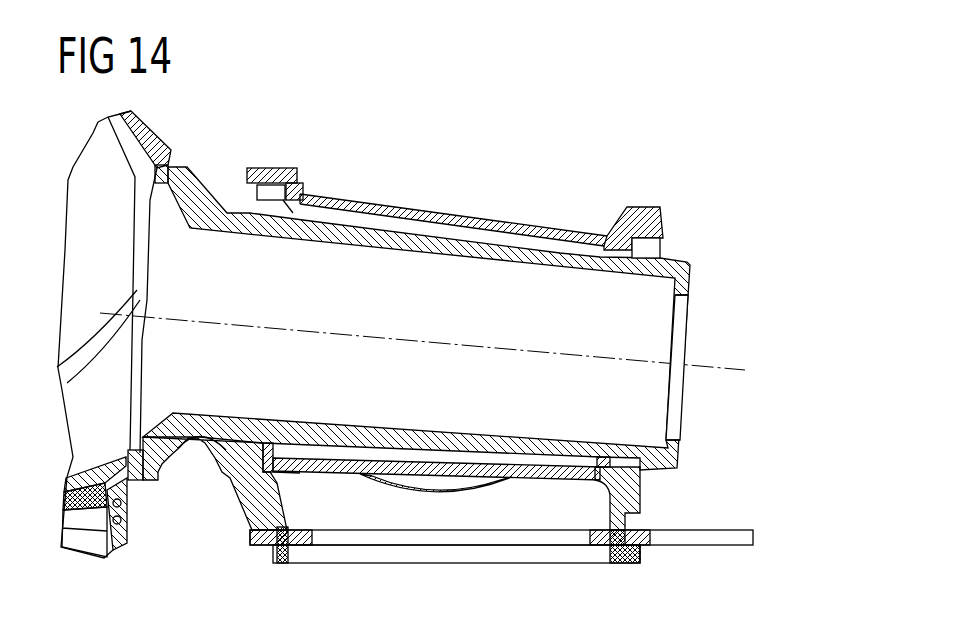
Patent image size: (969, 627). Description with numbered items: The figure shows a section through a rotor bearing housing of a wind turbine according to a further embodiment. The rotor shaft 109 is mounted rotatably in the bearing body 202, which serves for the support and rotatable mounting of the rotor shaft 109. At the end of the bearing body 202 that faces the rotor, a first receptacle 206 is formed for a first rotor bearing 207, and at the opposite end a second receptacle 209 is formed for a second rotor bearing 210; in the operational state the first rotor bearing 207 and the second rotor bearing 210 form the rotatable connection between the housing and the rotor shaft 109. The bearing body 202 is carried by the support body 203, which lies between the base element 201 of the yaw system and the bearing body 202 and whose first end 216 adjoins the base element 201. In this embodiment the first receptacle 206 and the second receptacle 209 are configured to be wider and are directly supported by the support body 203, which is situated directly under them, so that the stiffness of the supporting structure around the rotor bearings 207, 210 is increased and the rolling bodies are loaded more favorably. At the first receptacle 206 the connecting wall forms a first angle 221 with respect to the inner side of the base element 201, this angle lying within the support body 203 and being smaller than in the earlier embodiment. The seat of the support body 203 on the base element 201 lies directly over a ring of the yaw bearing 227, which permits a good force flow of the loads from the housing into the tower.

The rotor shaft 109 is at (696, 270).
The base element 201 is at (710, 529).
The bearing body 202 is at (423, 210).
The support body 203 is at (258, 498).
The first receptacle 206 is at (268, 158).
The first rotor bearing 207 is at (285, 189).
The second receptacle 209 is at (649, 193).
The second rotor bearing 210 is at (666, 236).
The first end 216 is at (336, 541).
The first angle 221 is at (305, 507).
The yaw bearing 227 is at (660, 560).